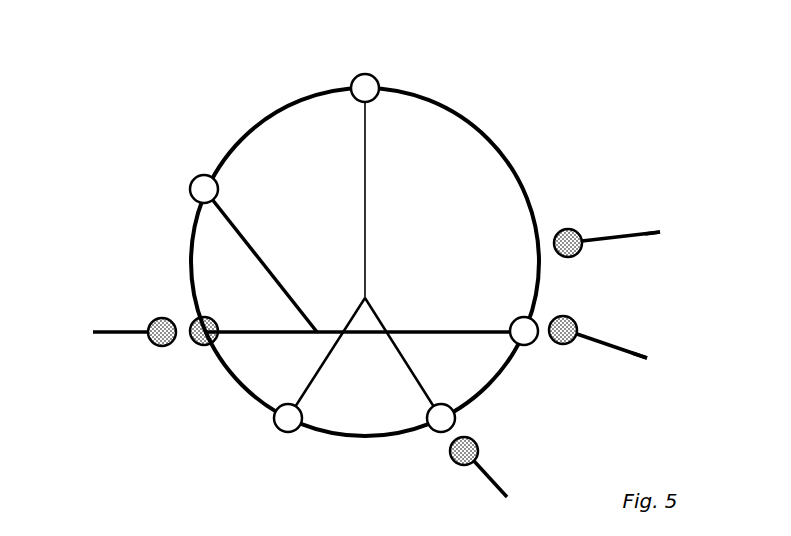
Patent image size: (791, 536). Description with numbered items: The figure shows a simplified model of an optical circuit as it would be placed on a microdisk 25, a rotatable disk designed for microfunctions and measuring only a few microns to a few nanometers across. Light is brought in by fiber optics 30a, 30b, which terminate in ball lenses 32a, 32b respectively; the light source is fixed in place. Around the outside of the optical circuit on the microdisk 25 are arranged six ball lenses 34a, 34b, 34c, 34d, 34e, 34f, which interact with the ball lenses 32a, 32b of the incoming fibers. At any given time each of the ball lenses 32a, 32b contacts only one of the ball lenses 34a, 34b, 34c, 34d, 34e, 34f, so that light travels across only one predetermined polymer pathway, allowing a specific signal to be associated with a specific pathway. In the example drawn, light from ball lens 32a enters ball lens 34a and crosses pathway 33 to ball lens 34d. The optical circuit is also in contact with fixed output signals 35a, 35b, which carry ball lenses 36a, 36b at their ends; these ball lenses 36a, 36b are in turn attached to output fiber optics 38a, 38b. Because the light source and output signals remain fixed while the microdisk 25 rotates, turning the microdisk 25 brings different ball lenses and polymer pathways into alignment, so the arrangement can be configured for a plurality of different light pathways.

The microdisk 25 is at (115, 88).
The fiber optic 30a is at (103, 328).
The fiber optic 30b is at (497, 488).
The ball lens 32a is at (163, 318).
The ball lens 32b is at (452, 462).
The pathway 33 is at (420, 330).
The ball lens 34a is at (213, 368).
The ball lens 34b is at (426, 432).
The ball lens 34c is at (274, 431).
The ball lens 34d is at (515, 316).
The ball lens 34e is at (356, 76).
The ball lens 34f is at (188, 194).
The output signal 35a is at (667, 232).
The output signal 35b is at (652, 353).
The ball lens 36a is at (563, 228).
The ball lens 36b is at (557, 346).
The fiber optic 38a is at (623, 233).
The fiber optic 38b is at (612, 348).